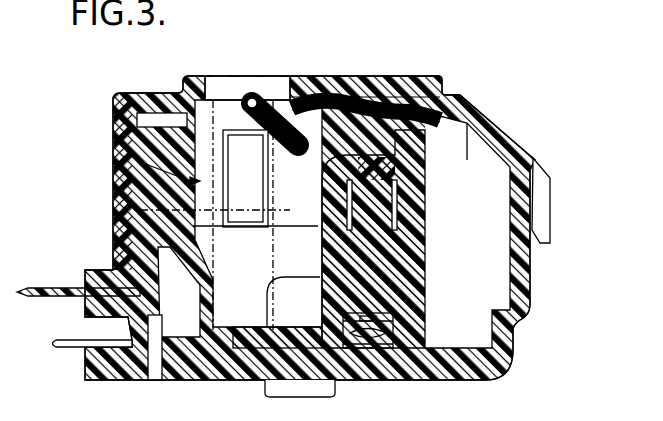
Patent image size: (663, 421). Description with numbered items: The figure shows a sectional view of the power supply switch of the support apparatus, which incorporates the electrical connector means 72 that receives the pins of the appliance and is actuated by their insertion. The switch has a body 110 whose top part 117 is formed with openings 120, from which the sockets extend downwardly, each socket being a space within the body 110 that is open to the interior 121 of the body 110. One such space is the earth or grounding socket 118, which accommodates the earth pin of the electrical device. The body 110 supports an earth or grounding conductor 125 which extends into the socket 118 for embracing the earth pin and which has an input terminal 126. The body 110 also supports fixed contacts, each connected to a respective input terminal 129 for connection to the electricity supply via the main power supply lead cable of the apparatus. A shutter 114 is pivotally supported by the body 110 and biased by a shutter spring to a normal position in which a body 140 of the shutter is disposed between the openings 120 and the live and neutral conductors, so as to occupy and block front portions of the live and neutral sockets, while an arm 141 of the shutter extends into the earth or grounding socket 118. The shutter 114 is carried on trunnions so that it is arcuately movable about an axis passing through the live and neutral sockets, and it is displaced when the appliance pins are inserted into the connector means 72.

The body 110 is at (510, 353).
The shutter 114 is at (378, 78).
The top part 117 is at (413, 78).
The earth or grounding socket 118 is at (140, 210).
The openings 120 is at (220, 83).
The interior 121 is at (118, 147).
The earth or grounding conductor 125 is at (247, 213).
The input terminal 126 is at (60, 287).
The input terminal 129 is at (67, 347).
The body of the shutter 140 is at (366, 112).
The arm of the shutter 141 is at (253, 103).
The electrical connector means 72 is at (280, 110).